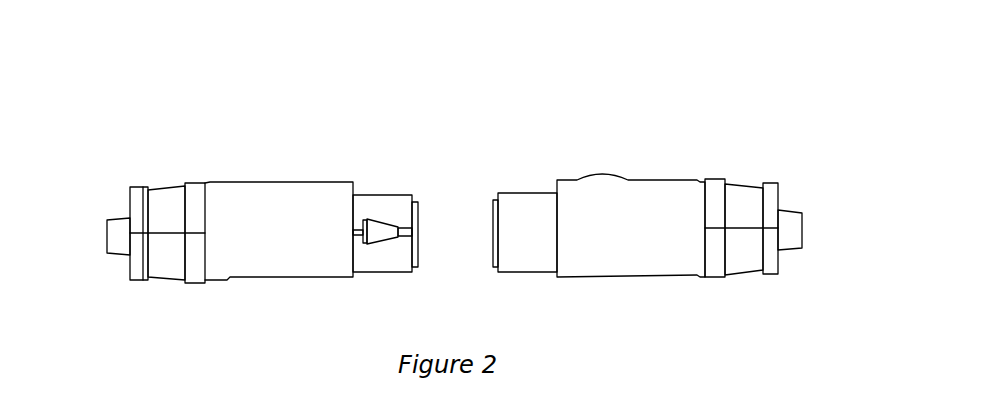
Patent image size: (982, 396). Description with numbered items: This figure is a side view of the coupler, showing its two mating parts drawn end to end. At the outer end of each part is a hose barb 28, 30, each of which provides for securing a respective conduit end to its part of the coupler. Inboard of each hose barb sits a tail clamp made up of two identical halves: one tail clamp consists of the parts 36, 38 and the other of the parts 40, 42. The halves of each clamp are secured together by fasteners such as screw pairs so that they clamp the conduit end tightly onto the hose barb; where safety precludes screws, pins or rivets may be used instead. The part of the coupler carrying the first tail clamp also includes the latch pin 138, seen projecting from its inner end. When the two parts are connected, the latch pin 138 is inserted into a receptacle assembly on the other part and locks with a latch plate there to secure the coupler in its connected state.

The hose barb 28 is at (792, 232).
The hose barb 30 is at (120, 238).
The tail clamp part 36 is at (165, 213).
The tail clamp part 38 is at (167, 255).
The tail clamp part 40 is at (743, 203).
The tail clamp part 42 is at (735, 253).
The latch pin 138 is at (380, 248).